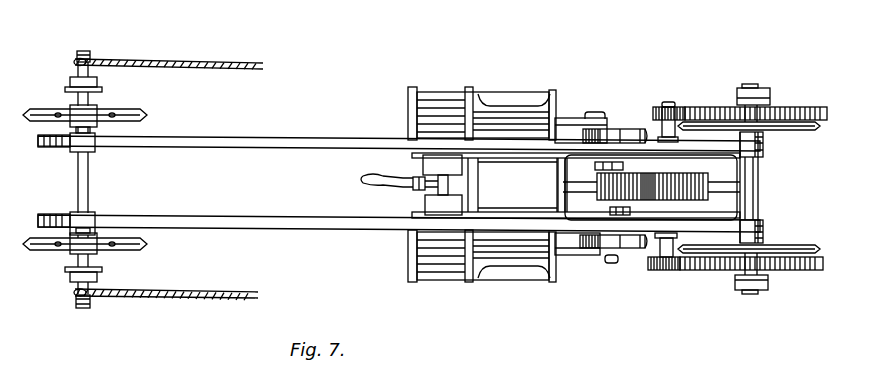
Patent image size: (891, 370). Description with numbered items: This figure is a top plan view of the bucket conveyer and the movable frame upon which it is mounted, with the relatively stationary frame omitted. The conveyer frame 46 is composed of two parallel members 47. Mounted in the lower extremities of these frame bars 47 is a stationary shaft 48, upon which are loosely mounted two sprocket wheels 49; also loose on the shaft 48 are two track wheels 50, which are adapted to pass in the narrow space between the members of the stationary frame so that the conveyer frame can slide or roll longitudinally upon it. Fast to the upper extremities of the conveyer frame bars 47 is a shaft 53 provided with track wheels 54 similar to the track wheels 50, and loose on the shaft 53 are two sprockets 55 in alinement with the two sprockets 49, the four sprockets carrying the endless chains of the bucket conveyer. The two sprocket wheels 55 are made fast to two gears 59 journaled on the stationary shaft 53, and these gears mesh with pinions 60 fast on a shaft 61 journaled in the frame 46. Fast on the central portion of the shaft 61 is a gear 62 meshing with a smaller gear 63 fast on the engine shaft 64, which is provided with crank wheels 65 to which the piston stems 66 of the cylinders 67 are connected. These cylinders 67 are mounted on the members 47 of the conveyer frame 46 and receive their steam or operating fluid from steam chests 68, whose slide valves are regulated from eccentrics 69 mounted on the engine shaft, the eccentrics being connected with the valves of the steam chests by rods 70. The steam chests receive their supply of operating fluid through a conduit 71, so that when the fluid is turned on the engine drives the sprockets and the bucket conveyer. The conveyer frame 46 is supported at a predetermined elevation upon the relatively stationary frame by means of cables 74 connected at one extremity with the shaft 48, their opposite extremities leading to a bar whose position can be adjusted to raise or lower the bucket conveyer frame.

The conveyer frame 46 is at (532, 207).
The parallel members 47 is at (294, 137).
The stationary shaft 48 is at (88, 185).
The sprocket wheels 49 is at (133, 113).
The track wheels 50 is at (70, 83).
The shaft 53 is at (758, 192).
The track wheels 54 is at (766, 92).
The sprockets 55 is at (800, 130).
The gears 59 is at (810, 106).
The pinions 60 is at (675, 97).
The shaft 61 is at (660, 119).
The gear 62 is at (706, 188).
The smaller gear 63 is at (607, 208).
The engine shaft 64 is at (627, 248).
The crank wheels 65 is at (632, 130).
The piston stems 66 is at (570, 118).
The cylinders 67 is at (482, 188).
The steam chests 68 is at (442, 185).
The eccentrics 69 is at (600, 170).
The rods 70 is at (530, 176).
The conduit 71 is at (363, 181).
The cables 74 is at (213, 53).